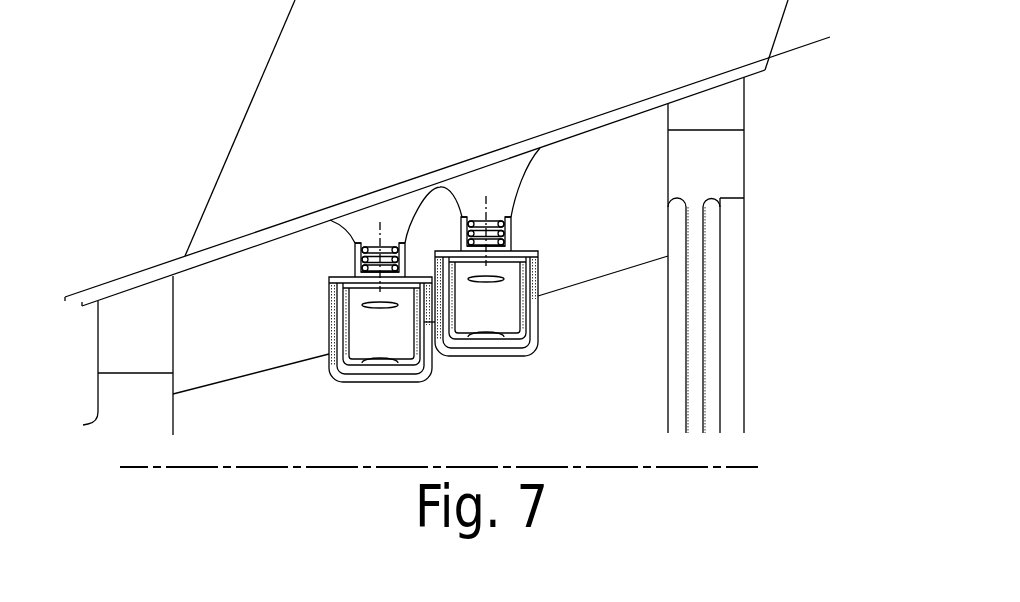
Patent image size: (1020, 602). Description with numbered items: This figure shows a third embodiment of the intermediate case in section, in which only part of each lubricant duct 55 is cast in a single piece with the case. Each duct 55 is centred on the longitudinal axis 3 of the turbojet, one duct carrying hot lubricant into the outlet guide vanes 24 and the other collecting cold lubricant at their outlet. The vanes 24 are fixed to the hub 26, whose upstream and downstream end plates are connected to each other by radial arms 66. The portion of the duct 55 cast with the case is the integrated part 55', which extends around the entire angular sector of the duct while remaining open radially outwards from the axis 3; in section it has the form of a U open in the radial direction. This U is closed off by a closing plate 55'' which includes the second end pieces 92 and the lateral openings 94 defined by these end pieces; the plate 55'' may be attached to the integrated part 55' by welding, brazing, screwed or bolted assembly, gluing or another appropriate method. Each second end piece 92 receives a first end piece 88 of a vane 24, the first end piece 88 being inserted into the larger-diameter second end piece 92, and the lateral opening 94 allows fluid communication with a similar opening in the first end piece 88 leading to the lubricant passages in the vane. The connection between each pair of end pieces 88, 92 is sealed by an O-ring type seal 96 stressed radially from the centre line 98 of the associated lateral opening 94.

The longitudinal axis 3 is at (613, 467).
The outlet guide vanes 24 is at (474, 132).
The hub 26 is at (316, 329).
The lubricant duct 55 is at (441, 351).
The integrated part 55' is at (445, 311).
The closing plate 55'' is at (388, 208).
The radial arms 66 is at (400, 454).
The first end piece 88 is at (360, 247).
The second end piece 92 is at (410, 242).
The lateral opening 94 is at (371, 290).
The O-ring type seal 96 is at (355, 244).
The centre line of the lateral opening 98 is at (380, 220).